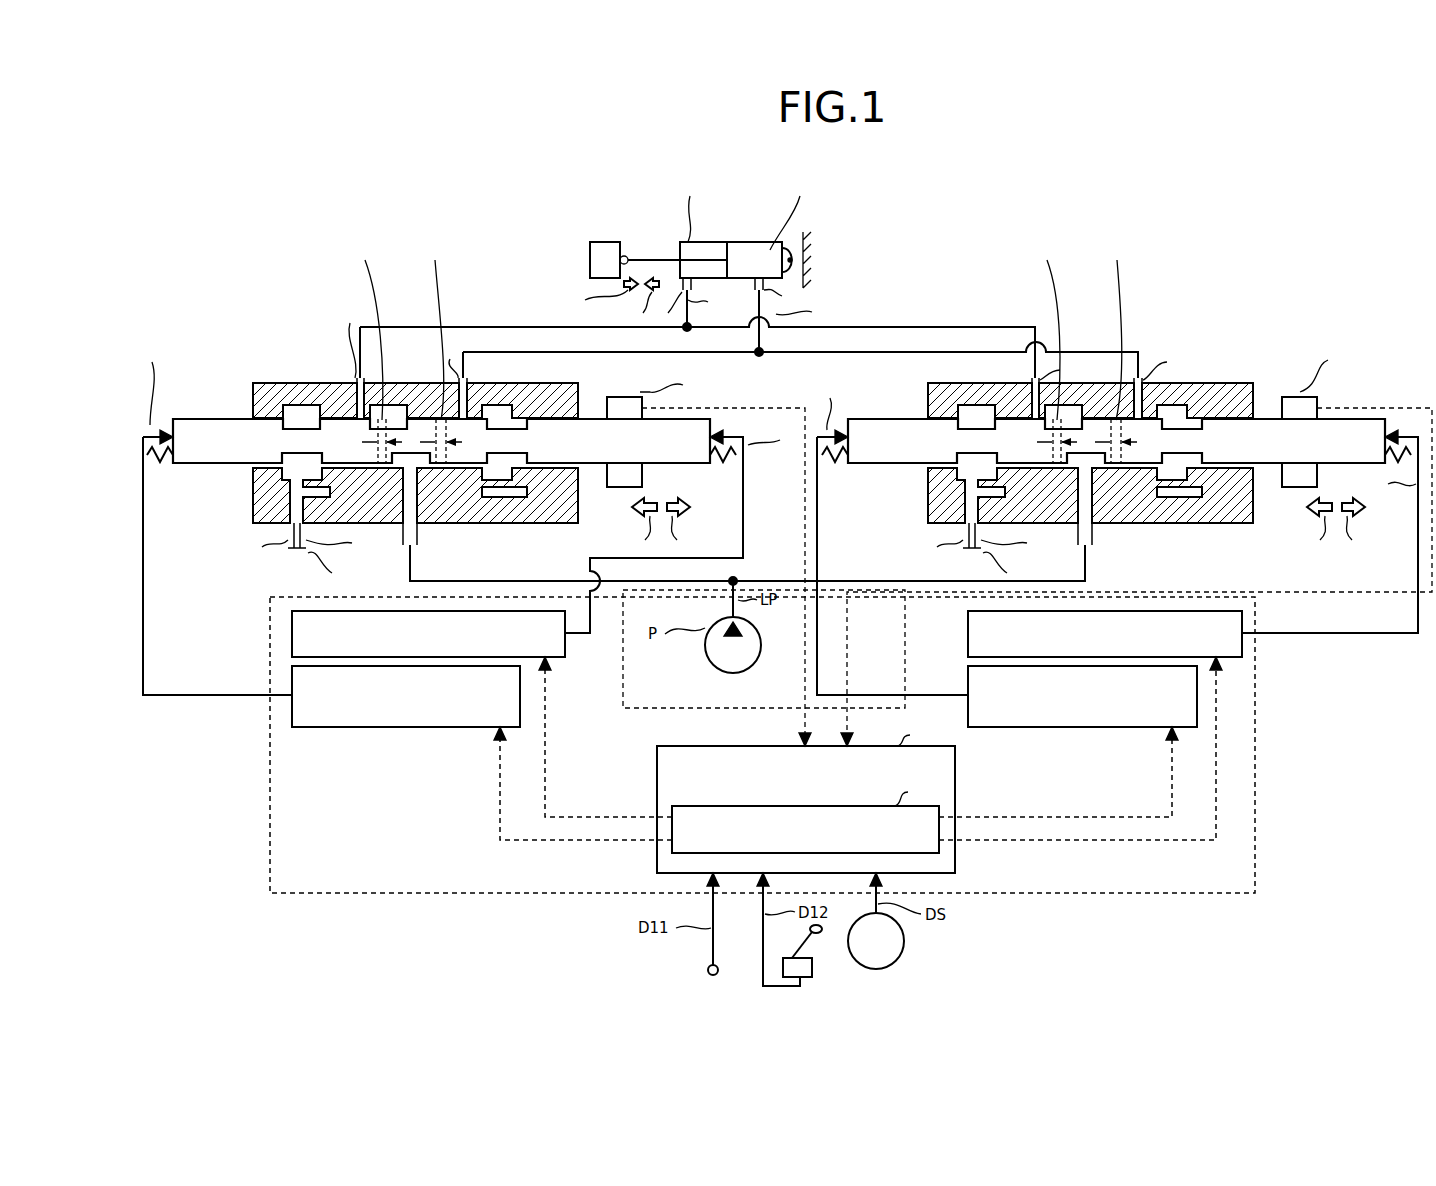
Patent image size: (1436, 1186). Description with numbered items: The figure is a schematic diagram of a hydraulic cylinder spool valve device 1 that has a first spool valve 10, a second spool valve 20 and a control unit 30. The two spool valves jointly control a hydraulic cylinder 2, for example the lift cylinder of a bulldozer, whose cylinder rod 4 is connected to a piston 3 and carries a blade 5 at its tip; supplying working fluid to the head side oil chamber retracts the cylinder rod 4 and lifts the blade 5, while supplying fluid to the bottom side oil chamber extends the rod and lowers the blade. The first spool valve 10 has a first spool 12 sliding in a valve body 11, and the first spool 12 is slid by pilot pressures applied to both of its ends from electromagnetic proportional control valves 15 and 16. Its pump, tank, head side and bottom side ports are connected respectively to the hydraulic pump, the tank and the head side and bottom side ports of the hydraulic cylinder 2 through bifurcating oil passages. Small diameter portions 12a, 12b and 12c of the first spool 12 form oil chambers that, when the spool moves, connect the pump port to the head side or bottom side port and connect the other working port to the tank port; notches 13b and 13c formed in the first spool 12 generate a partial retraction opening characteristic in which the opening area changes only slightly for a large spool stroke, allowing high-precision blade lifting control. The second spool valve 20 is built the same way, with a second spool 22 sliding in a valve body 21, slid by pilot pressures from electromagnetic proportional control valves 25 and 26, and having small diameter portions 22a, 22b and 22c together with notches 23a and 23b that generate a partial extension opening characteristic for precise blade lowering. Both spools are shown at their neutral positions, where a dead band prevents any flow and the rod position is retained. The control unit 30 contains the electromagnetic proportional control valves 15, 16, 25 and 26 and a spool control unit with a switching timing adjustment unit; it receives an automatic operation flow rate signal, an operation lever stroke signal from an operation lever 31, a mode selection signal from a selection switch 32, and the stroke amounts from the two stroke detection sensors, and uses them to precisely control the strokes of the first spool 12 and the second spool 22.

The hydraulic cylinder spool valve device 1 is at (1258, 288).
The hydraulic cylinder 2 is at (752, 240).
The piston 3 is at (726, 242).
The cylinder rod 4 is at (650, 256).
The blade 5 is at (603, 242).
The first spool valve 10 is at (290, 355).
The valve body 11 is at (253, 390).
The first spool 12 is at (213, 419).
The small diameter portion 12a is at (300, 462).
The small diameter portion 12b is at (420, 470).
The small diameter portion 12c is at (514, 465).
The notch 13b is at (394, 422).
The notch 13c is at (472, 422).
The electromagnetic proportional control valve 15 is at (567, 640).
The electromagnetic proportional control valve 16 is at (440, 730).
The second spool valve 20 is at (1235, 355).
The valve body 21 is at (1256, 392).
The second spool 22 is at (1375, 419).
The small diameter portion 22a is at (975, 462).
The small diameter portion 22b is at (1095, 470).
The small diameter portion 22c is at (1189, 465).
The notch 23a is at (1045, 422).
The notch 23b is at (1123, 422).
The electromagnetic proportional control valve 25 is at (966, 625).
The electromagnetic proportional control valve 26 is at (1016, 730).
The control unit 30 is at (1258, 690).
The operation lever 31 is at (813, 968).
The selection switch 32 is at (903, 950).